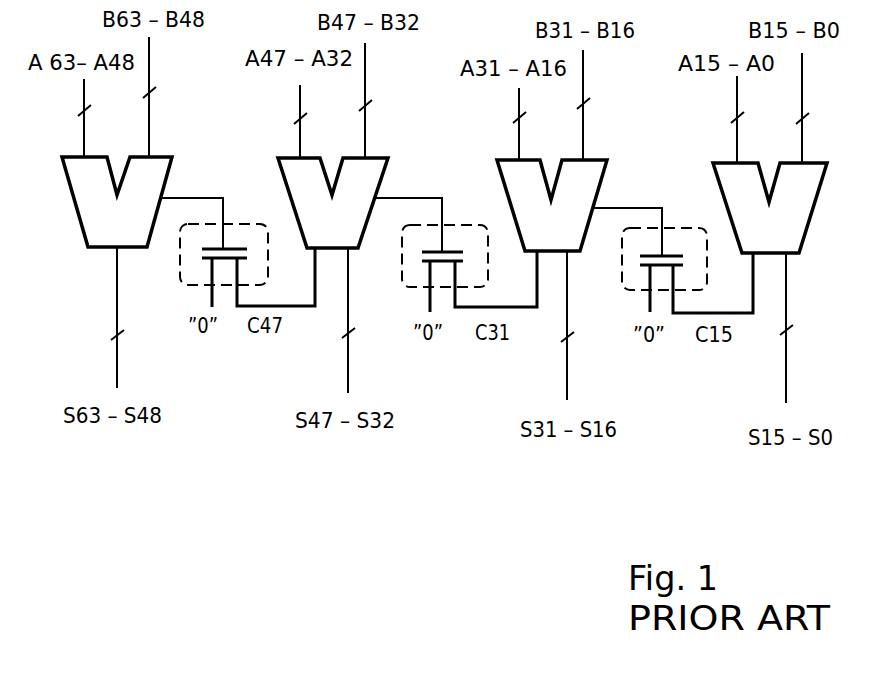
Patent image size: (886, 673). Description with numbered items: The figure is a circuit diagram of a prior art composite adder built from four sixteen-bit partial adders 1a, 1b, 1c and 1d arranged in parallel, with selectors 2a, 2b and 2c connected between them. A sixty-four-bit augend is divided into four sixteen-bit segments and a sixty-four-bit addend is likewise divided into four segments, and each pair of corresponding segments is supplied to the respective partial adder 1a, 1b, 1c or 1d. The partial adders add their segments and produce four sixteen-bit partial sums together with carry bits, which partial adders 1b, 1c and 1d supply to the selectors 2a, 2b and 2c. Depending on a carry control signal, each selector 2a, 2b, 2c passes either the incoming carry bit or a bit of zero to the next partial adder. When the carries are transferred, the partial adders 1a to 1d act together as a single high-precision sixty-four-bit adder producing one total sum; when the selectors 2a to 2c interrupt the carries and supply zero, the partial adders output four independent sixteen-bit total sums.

The 16-bit partial adder 1a is at (72, 198).
The 16-bit partial adder 1b is at (288, 200).
The 16-bit partial adder 1c is at (508, 200).
The 16-bit partial adder 1d is at (722, 197).
The selector 2a is at (182, 283).
The selector 2b is at (403, 284).
The selector 2c is at (625, 287).